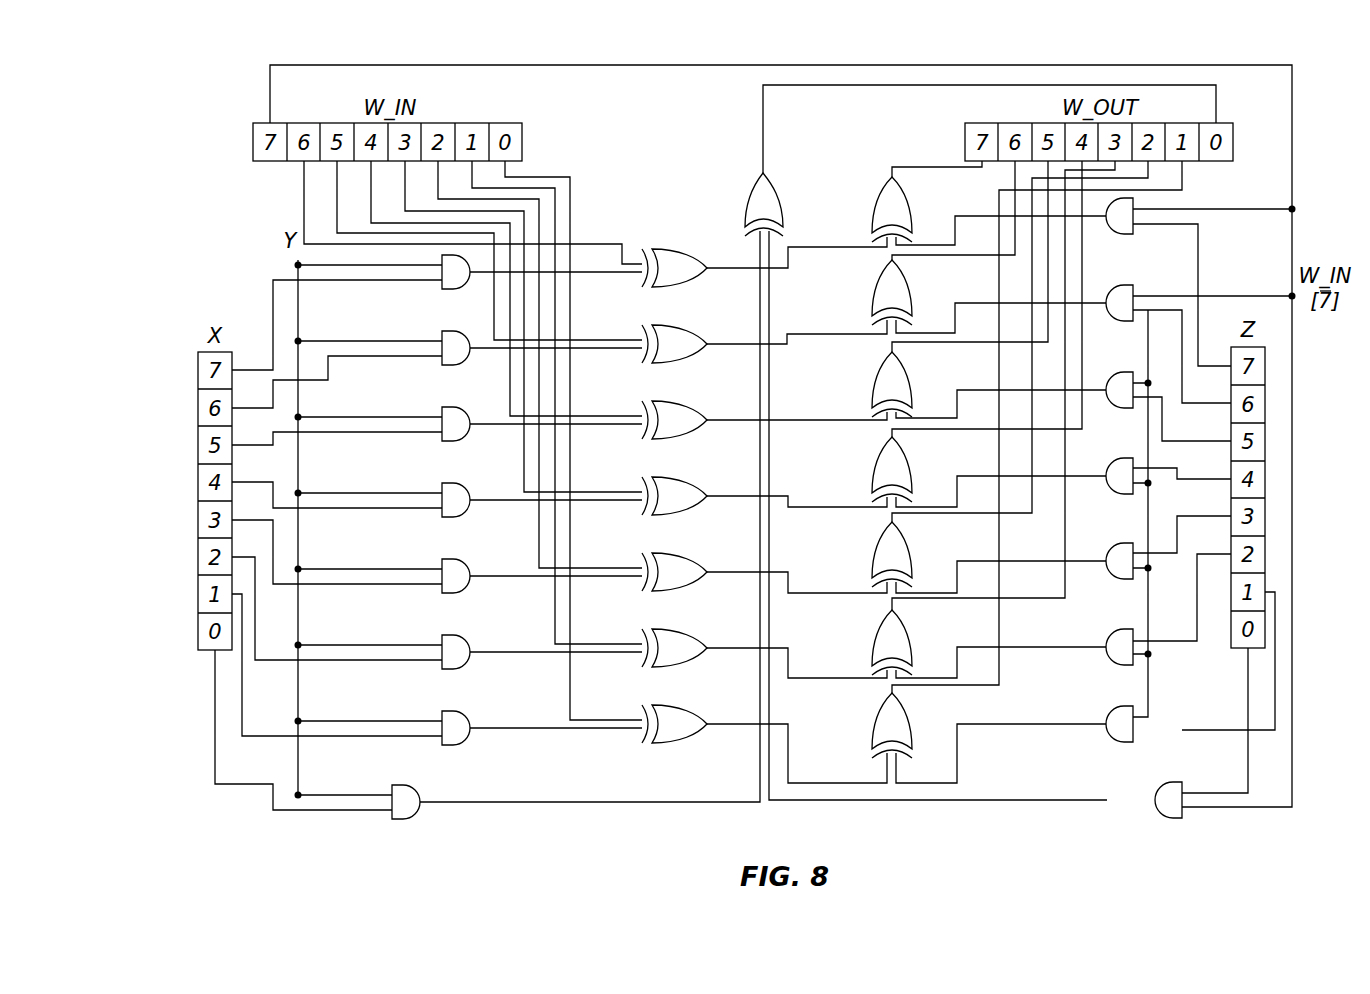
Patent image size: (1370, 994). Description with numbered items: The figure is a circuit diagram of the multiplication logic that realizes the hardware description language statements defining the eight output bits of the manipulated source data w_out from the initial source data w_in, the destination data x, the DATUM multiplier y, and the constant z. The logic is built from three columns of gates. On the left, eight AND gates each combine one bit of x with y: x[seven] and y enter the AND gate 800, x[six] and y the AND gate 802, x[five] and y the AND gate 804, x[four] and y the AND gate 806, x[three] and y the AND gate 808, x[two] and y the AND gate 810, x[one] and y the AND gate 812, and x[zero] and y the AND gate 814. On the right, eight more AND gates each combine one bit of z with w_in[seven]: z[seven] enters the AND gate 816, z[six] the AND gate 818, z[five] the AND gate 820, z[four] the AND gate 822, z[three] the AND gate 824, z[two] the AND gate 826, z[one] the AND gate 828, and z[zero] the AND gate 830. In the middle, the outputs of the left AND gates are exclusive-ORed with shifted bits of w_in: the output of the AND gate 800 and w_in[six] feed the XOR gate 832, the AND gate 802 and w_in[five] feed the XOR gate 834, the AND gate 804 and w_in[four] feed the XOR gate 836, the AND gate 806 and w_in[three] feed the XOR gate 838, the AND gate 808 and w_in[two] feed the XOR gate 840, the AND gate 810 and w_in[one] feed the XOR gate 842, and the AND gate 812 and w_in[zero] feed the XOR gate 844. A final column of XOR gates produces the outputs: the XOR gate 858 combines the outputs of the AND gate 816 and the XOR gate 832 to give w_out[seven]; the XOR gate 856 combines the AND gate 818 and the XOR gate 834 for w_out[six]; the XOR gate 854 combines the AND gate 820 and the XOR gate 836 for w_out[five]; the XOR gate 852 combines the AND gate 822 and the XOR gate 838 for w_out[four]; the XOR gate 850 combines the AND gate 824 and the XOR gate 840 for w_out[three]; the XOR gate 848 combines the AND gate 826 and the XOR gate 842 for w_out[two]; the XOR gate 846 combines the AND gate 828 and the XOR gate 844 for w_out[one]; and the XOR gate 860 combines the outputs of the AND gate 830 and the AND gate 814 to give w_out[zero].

The AND gate 800 is at (452, 289).
The AND gate 802 is at (452, 365).
The AND gate 804 is at (452, 441).
The AND gate 806 is at (452, 517).
The AND gate 808 is at (452, 593).
The AND gate 810 is at (452, 669).
The AND gate 812 is at (452, 745).
The AND gate 814 is at (396, 819).
The AND gate 816 is at (1135, 205).
The AND gate 818 is at (1128, 287).
The AND gate 820 is at (1128, 408).
The AND gate 822 is at (1128, 494).
The AND gate 824 is at (1128, 579).
The AND gate 826 is at (1128, 665).
The AND gate 828 is at (1128, 742).
The AND gate 830 is at (1170, 818).
The XOR gate 832 is at (662, 287).
The XOR gate 834 is at (662, 363).
The XOR gate 836 is at (662, 439).
The XOR gate 838 is at (662, 515).
The XOR gate 840 is at (662, 591).
The XOR gate 842 is at (662, 667).
The XOR gate 844 is at (662, 743).
The XOR gate 846 is at (872, 732).
The XOR gate 848 is at (872, 649).
The XOR gate 850 is at (872, 561).
The XOR gate 852 is at (872, 476).
The XOR gate 854 is at (872, 391).
The XOR gate 856 is at (872, 299).
The XOR gate 858 is at (872, 216).
The XOR gate 860 is at (750, 187).